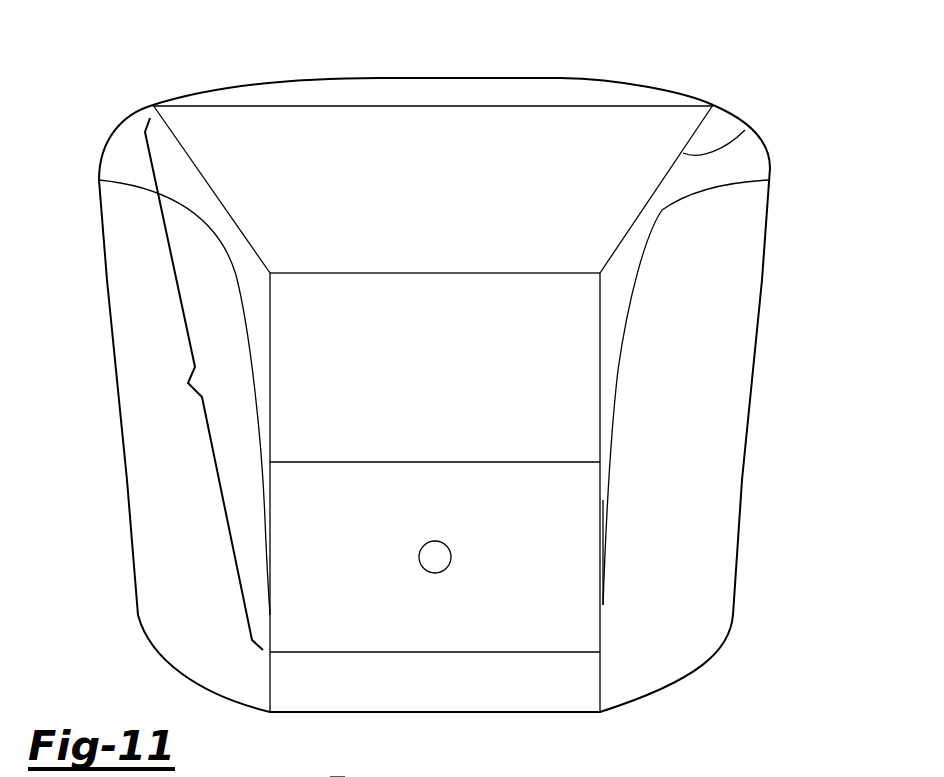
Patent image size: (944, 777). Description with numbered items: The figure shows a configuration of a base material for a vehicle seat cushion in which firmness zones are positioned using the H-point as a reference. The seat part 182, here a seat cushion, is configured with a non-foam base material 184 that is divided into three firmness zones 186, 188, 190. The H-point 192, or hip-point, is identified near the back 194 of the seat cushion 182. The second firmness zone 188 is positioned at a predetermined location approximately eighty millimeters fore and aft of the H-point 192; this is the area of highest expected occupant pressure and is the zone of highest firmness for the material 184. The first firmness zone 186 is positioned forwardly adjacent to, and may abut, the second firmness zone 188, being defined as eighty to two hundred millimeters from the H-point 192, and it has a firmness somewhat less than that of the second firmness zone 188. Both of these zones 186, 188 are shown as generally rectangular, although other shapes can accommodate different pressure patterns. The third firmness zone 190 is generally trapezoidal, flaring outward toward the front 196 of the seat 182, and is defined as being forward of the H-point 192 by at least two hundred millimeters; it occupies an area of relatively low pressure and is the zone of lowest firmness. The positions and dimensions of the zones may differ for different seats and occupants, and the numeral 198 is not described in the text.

The seat part 182 is at (793, 259).
The non-foam base material 184 is at (184, 384).
The first firmness zone 186 is at (600, 372).
The second firmness zone 188 is at (600, 550).
The third firmness zone 190 is at (745, 130).
The H-point 192 is at (419, 558).
The back 194 is at (677, 710).
The front 196 is at (708, 84).
The lower seat portion 198 is at (348, 776).